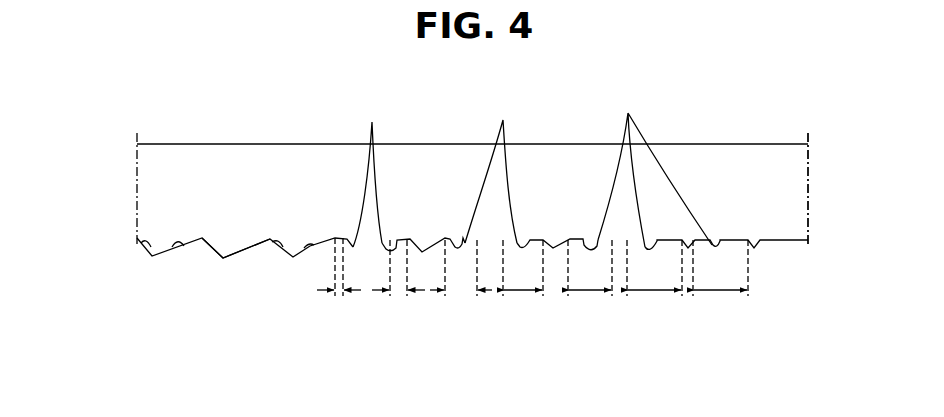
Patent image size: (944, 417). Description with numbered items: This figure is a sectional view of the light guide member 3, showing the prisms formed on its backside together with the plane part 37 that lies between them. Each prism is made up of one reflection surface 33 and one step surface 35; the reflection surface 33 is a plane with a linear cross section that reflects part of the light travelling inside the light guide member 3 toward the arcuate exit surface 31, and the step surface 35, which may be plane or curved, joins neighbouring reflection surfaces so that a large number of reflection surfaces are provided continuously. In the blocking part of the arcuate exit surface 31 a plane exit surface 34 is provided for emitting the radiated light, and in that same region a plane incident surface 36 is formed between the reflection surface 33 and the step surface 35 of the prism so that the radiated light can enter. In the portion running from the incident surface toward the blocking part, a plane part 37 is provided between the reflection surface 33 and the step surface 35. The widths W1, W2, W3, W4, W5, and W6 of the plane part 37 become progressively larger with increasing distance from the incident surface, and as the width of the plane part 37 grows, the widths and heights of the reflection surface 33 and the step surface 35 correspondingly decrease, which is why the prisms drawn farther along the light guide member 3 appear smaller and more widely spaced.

The light guide member 3 is at (177, 141).
The arcuate exit surface 31 is at (262, 142).
The reflection surface 33 is at (183, 246).
The plane exit surface 34 is at (788, 144).
The step surface 35 is at (148, 249).
The plane incident surface 36 is at (788, 242).
The plane part 37 is at (373, 120).
The width of the plane part W1 is at (335, 294).
The width of the plane part W2 is at (395, 294).
The width of the plane part W3 is at (457, 294).
The width of the plane part W4 is at (522, 294).
The width of the plane part W5 is at (588, 294).
The width of the plane part W6 is at (713, 294).